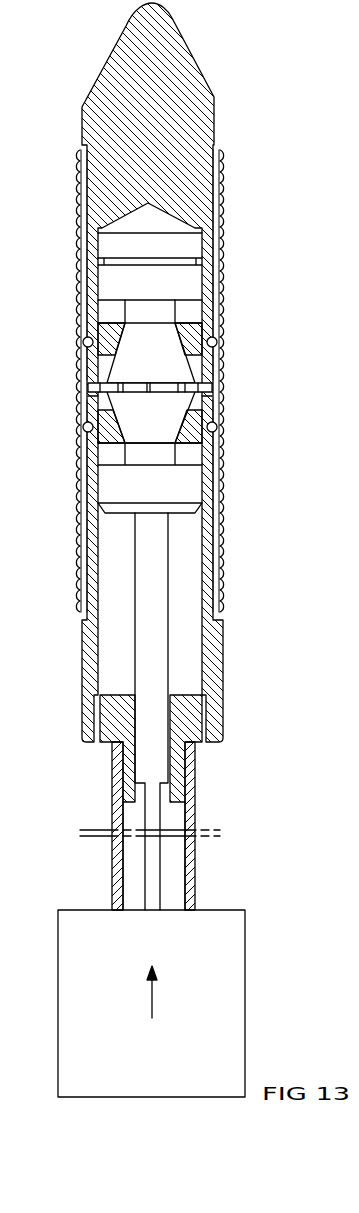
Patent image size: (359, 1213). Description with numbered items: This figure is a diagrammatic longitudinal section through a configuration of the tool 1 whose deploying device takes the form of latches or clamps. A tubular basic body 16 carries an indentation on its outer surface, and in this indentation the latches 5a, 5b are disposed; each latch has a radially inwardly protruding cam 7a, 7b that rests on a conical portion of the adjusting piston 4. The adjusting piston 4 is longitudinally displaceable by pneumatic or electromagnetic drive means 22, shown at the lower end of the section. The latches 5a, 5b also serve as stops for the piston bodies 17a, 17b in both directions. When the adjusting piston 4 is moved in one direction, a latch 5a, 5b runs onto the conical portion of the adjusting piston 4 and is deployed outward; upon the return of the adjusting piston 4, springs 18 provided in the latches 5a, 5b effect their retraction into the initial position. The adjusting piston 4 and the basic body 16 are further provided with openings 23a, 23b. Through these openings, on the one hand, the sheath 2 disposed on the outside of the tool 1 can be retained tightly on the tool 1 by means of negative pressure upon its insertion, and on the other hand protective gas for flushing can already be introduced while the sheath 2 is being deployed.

The tool 1 is at (34, 0).
The sheath 2 is at (75, 215).
The adjusting piston 4 is at (152, 637).
The latch 5a is at (75, 276).
The latch 5b is at (77, 575).
The cam 7a is at (83, 345).
The cam 7b is at (82, 440).
The tubular basic body 16 is at (218, 677).
The piston body 17a is at (165, 290).
The piston body 17b is at (165, 485).
The spring 18 is at (192, 345).
The drive means 22 is at (244, 948).
The opening 23a is at (88, 400).
The opening 23b is at (88, 384).